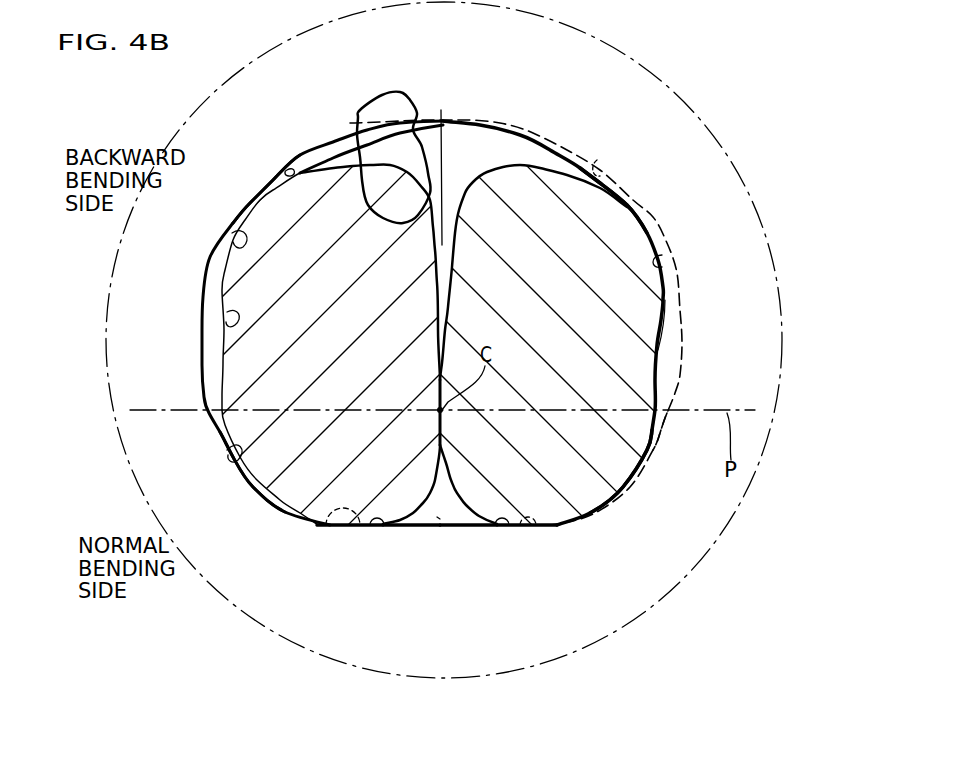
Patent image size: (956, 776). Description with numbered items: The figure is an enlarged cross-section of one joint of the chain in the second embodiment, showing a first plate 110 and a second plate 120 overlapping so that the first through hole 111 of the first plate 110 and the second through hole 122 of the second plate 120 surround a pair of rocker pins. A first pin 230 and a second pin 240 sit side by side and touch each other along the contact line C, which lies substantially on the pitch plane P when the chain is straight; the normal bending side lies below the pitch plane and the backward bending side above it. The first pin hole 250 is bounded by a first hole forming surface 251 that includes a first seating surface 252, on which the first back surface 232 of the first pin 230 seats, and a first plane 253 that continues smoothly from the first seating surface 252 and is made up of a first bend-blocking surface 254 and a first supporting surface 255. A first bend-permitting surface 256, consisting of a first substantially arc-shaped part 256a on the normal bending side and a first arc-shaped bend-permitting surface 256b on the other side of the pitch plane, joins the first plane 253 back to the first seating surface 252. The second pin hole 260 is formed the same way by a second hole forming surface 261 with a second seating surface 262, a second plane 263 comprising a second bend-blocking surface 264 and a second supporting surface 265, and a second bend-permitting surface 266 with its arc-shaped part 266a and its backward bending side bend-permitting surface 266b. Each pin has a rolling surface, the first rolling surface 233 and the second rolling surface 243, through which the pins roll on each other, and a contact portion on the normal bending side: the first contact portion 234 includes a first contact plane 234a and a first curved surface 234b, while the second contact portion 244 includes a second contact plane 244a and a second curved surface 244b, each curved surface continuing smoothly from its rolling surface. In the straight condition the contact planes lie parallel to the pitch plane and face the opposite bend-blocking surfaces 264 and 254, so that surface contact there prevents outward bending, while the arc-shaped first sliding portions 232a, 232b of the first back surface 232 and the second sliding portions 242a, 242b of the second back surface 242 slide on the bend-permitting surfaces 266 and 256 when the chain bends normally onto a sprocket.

The first plate 110 is at (692, 128).
The second plate 120 is at (352, 142).
The second through hole 122 is at (407, 160).
The first through hole 111 is at (457, 180).
The first pin 230 is at (637, 463).
The first back surface 232 is at (662, 405).
The first sliding portion 232a is at (622, 488).
The first sliding portion 232b is at (623, 202).
The first rolling surface 233 is at (465, 217).
The first contact portion 234 is at (510, 581).
The first contact plane 234a is at (515, 527).
The first curved surface 234b is at (462, 527).
The second pin 240 is at (247, 425).
The second back surface 242 is at (215, 406).
The second sliding portion 242a is at (243, 463).
The second sliding portion 242b is at (260, 198).
The second rolling surface 243 is at (441, 165).
The second contact portion 244 is at (368, 586).
The second contact plane 244a is at (363, 527).
The second curved surface 244b is at (423, 527).
The first pin hole 250 is at (437, 325).
The first hole forming surface 251 is at (655, 325).
The first seating surface 252 is at (662, 255).
The first plane 253 is at (453, 513).
The first bend-blocking surface 254 is at (383, 527).
The first supporting surface 255 is at (535, 527).
The first bend-permitting surface 256 is at (210, 363).
The first substantially arc-shaped part 256a is at (227, 450).
The first arc-shaped bend-permitting surface 256b is at (287, 170).
The second pin hole 260 is at (446, 313).
The second hole forming surface 261 is at (227, 312).
The second seating surface 262 is at (233, 233).
The second plane 263 is at (437, 517).
The second bend-blocking surface 264 is at (493, 527).
The second supporting surface 265 is at (312, 532).
The second bend-permitting surface 266 is at (673, 352).
The second substantially arc-shaped part 266a is at (653, 440).
The second backward bending side bend-permitting surface 266b is at (597, 160).